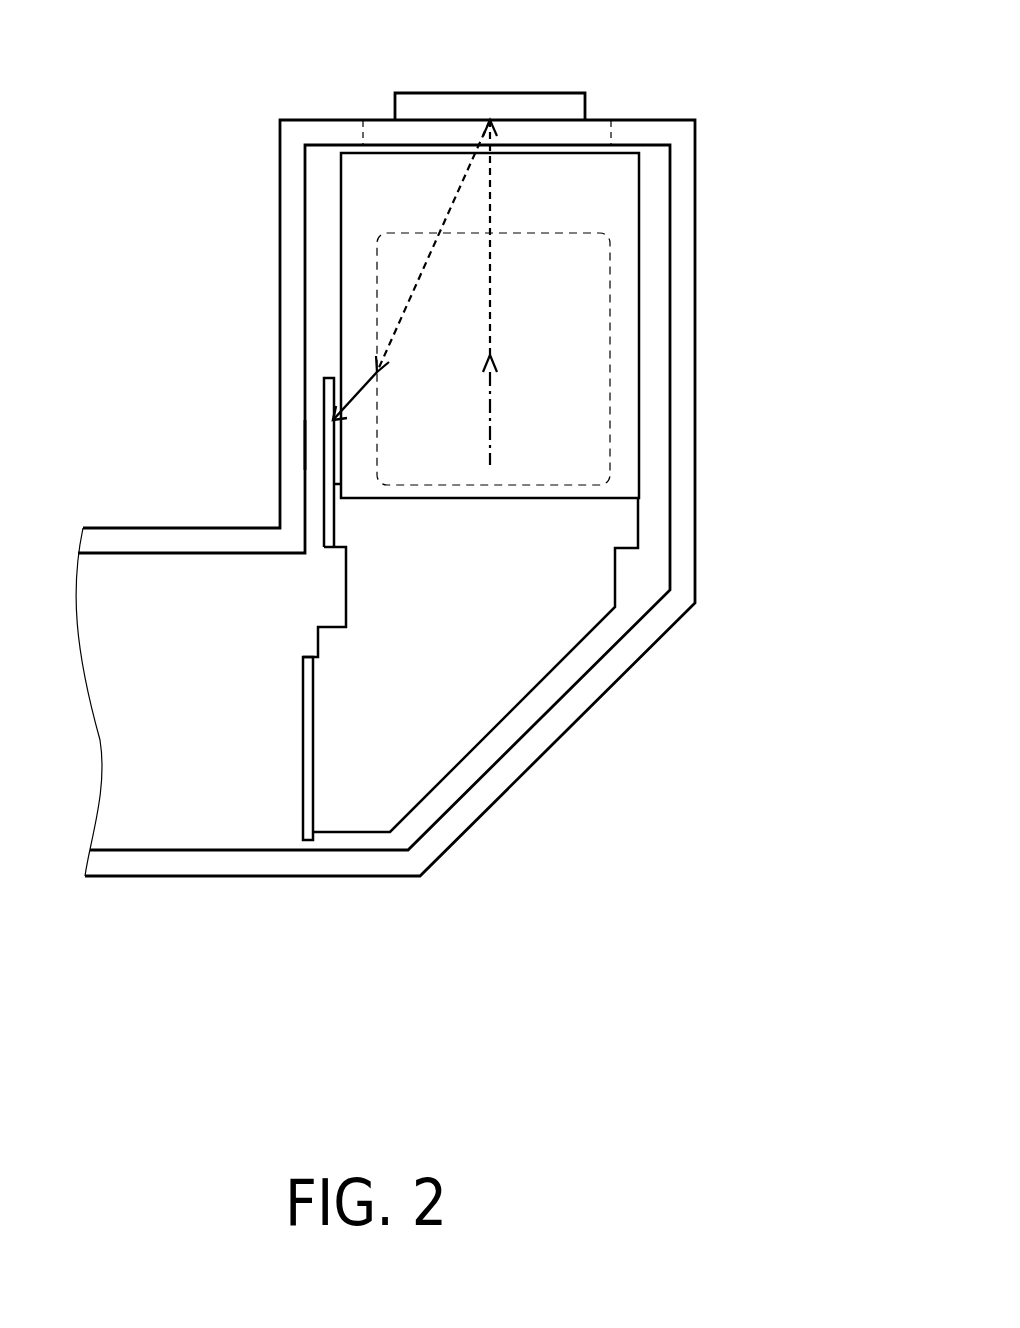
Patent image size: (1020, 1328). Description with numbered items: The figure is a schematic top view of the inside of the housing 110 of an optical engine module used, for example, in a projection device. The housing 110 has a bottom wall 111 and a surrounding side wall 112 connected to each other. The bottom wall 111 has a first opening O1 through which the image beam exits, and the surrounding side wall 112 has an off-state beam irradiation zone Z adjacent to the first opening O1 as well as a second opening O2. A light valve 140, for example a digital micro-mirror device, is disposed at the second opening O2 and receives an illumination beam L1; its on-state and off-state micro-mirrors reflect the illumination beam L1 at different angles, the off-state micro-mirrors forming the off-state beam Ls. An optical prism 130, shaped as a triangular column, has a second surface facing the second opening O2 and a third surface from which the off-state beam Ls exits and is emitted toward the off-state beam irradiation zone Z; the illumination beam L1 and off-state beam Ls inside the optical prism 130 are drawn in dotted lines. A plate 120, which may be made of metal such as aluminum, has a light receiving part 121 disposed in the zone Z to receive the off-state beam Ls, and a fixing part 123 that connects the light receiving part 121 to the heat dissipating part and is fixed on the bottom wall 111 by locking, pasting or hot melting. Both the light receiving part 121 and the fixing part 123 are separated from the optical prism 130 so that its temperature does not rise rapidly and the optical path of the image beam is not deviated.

The housing 110 is at (222, 862).
The bottom wall 111 is at (272, 823).
The surrounding side wall 112 is at (308, 448).
The plate 120 is at (358, 607).
The light receiving part 121 is at (330, 398).
The fixing part 123 is at (470, 707).
The optical prism 130 is at (623, 318).
The light valve 140 is at (510, 113).
The first opening O1 is at (612, 390).
The second opening O2 is at (596, 128).
The illumination beam L1 is at (492, 428).
The off-state beam Ls is at (462, 177).